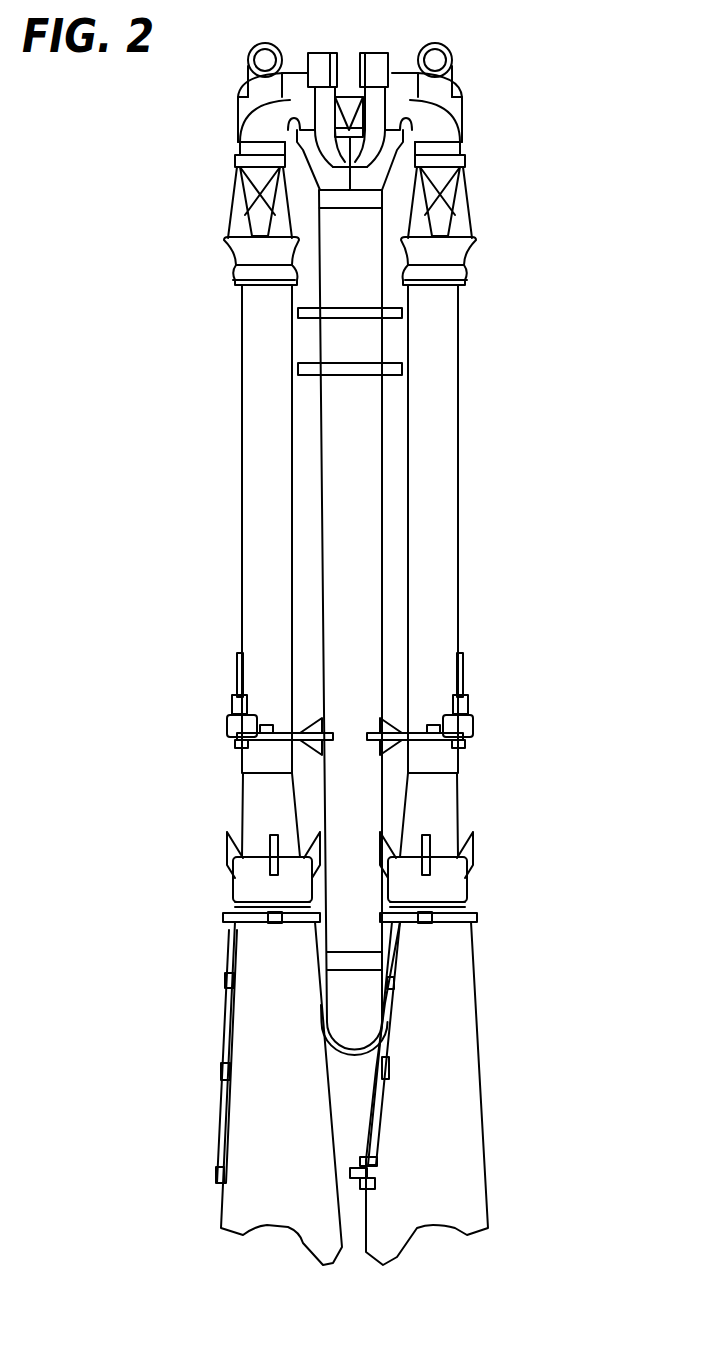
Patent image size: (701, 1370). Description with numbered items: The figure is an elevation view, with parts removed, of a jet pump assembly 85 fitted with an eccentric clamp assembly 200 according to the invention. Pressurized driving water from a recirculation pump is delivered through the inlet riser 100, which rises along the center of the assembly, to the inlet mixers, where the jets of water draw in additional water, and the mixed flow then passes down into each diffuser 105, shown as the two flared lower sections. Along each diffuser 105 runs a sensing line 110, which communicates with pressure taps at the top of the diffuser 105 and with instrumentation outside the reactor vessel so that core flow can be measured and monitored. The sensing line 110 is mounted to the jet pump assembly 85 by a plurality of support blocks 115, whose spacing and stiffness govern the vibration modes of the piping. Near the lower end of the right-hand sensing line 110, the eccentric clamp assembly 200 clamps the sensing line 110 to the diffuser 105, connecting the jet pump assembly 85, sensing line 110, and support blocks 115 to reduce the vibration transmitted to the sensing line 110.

The jet pump assembly 85 is at (495, 690).
The inlet riser 100 is at (320, 487).
The diffuser 105 is at (248, 1118).
The sensing line 110 is at (225, 1042).
The support block 115 is at (228, 982).
The eccentric clamp assembly 200 is at (362, 1192).